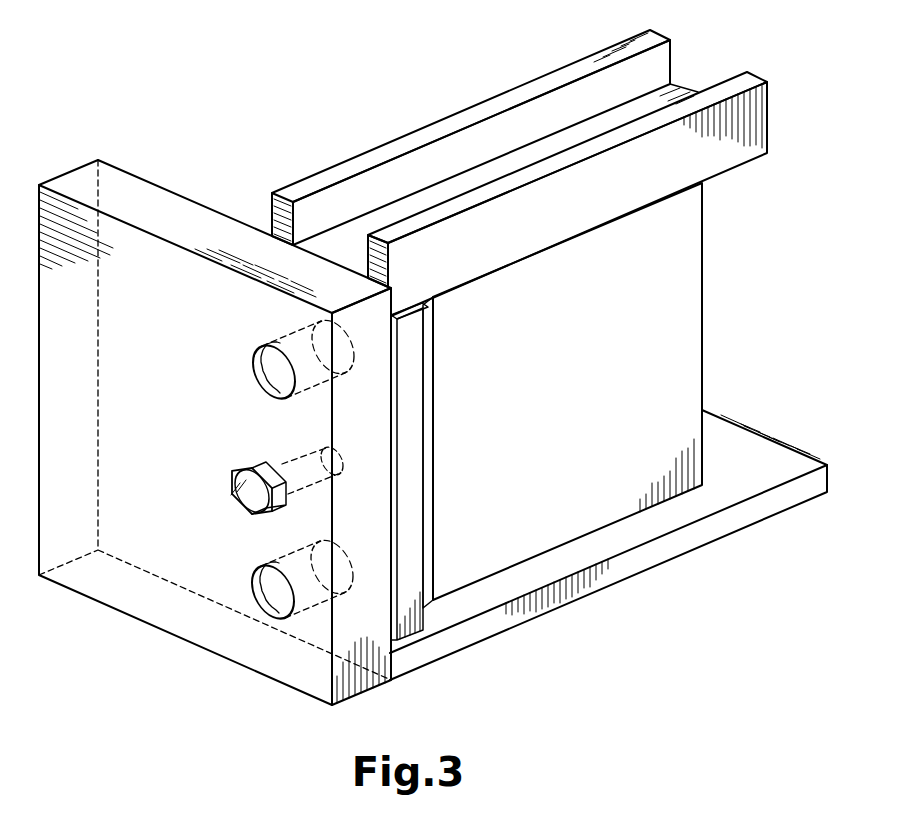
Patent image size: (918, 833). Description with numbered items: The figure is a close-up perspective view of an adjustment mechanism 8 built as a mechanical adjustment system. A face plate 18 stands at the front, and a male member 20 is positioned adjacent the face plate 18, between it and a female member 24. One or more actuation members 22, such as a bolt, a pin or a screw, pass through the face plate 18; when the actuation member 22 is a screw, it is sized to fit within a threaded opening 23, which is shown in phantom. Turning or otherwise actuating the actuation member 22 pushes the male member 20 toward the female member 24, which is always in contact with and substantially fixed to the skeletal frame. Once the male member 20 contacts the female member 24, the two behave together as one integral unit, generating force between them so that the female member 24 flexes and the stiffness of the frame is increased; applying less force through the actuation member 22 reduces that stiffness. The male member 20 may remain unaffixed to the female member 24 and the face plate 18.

The adjustment mechanism 8 is at (58, 118).
The face plate 18 is at (142, 427).
The male member 20 is at (412, 612).
The actuation member 22 is at (247, 497).
The threaded opening 23 is at (303, 468).
The female member 24 is at (576, 409).